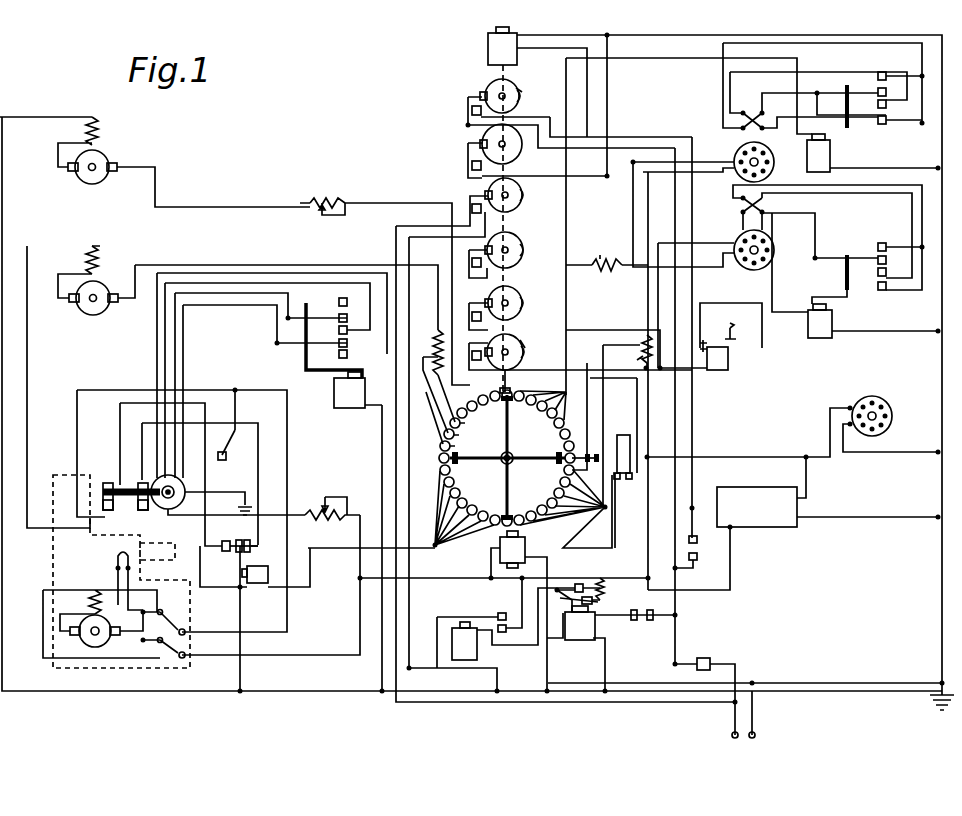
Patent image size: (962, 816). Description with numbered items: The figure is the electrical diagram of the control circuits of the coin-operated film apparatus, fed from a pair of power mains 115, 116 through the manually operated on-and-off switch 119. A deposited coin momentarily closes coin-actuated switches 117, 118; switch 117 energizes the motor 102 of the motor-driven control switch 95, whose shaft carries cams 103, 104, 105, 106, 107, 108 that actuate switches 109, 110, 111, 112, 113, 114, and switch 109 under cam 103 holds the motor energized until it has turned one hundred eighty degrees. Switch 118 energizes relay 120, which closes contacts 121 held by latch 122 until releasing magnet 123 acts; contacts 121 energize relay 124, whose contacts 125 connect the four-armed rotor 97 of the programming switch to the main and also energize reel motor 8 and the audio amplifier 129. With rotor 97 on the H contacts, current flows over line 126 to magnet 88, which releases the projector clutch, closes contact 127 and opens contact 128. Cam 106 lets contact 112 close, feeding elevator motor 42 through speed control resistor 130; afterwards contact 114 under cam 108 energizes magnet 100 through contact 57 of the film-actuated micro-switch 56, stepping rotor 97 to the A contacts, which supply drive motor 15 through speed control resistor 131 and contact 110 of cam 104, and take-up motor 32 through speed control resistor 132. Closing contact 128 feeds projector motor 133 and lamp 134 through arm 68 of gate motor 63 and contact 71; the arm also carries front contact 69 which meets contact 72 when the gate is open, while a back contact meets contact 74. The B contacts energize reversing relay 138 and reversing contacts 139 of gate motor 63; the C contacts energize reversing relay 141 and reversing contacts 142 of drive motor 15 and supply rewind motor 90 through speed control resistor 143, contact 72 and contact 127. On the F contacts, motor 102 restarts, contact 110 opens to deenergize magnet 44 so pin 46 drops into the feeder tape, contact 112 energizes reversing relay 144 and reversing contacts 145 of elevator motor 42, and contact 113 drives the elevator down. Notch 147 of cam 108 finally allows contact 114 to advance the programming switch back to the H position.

The motor 8 is at (880, 402).
The drive motor 15 is at (775, 163).
The film take-up motor 32 is at (110, 158).
The elevator motor 42 is at (740, 262).
The magnet 44 is at (728, 360).
The pin 46 is at (735, 331).
The film-actuated micro-switch 56 is at (622, 433).
The contact 57 is at (617, 479).
The gate motor 63 is at (181, 488).
The arm 68 is at (218, 490).
The front contact 69 is at (128, 485).
The contact 71 is at (115, 513).
The contact 72 is at (141, 511).
The contact 74 is at (227, 457).
The magnet 88 is at (258, 583).
The motor 90 is at (107, 290).
The motor-driven control switch 95 is at (519, 92).
The rotor 97 is at (512, 452).
The magnet 100 is at (500, 548).
The motor 102 is at (488, 44).
The cam 103 is at (486, 85).
The cam 104 is at (517, 150).
The cam 105 is at (522, 195).
The cam 106 is at (522, 246).
The cam 107 is at (522, 298).
The cam 108 is at (523, 352).
The switch 109 is at (470, 110).
The contact 110 is at (470, 165).
The switch 111 is at (470, 208).
The contact 112 is at (470, 262).
The contact 113 is at (473, 310).
The contact 114 is at (471, 352).
The power main 115 is at (732, 737).
The power main 116 is at (756, 736).
The coin-actuated switch 117 is at (700, 548).
The coin-actuated switch 118 is at (642, 622).
The manually operated switch 119 is at (708, 658).
The relay 120 is at (580, 640).
The contacts 121 is at (580, 583).
The latch 122 is at (600, 601).
The releasing magnet 123 is at (606, 586).
The relay 124 is at (466, 660).
The contacts 125 is at (501, 612).
The line 126 is at (342, 550).
The contact 127 is at (250, 548).
The contact 128 is at (224, 552).
The audio amplifier 129 is at (760, 481).
The speed control resistor 130 is at (622, 262).
The speed control resistor 131 is at (644, 338).
The speed control resistor 132 is at (332, 200).
The motor 133 is at (112, 638).
The lamp 134 is at (116, 556).
The reversing relay 138 is at (334, 395).
The reversing contacts 139 is at (337, 312).
The reversing relay 141 is at (830, 152).
The reversing contacts 142 is at (890, 112).
The speed control resistor 143 is at (436, 340).
The reversing relay 144 is at (832, 318).
The reversing contacts 145 is at (877, 250).
The notch 147 is at (522, 344).